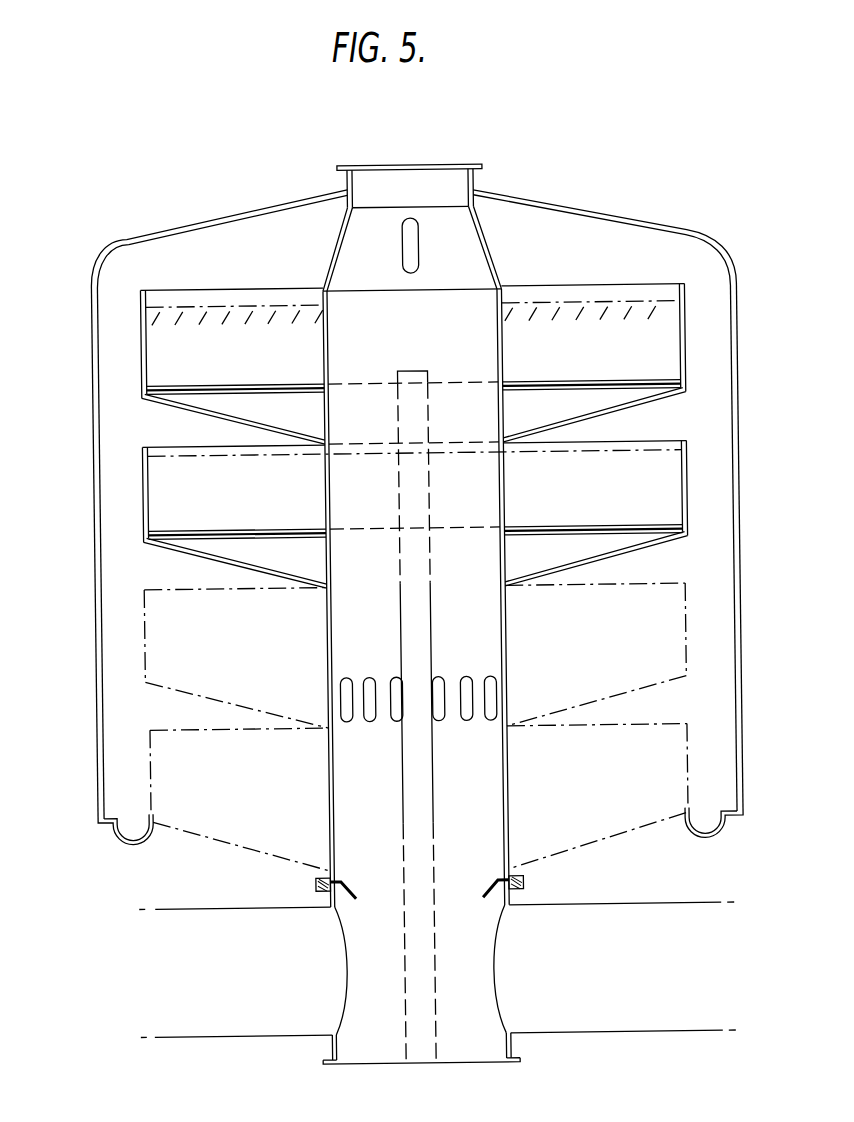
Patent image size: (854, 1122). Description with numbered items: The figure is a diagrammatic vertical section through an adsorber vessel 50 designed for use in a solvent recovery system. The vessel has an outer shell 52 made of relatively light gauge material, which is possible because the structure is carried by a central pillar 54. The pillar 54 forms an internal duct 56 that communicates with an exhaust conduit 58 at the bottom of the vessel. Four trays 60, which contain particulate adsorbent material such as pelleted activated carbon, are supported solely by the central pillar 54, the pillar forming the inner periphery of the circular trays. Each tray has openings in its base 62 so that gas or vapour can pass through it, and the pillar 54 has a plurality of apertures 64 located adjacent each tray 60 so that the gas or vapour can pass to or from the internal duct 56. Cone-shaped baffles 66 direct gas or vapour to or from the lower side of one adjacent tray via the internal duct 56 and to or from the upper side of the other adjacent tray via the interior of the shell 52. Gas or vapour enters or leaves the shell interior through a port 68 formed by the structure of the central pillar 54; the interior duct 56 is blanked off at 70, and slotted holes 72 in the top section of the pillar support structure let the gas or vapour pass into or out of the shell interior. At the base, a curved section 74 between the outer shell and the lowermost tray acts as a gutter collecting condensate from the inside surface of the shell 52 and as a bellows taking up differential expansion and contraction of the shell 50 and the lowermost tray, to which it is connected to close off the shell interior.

The adsorber vessel 50 is at (155, 226).
The outer shell 52 is at (97, 327).
The central pillar 54 is at (322, 627).
The internal duct 56 is at (351, 573).
The exhaust conduit 58 is at (225, 916).
The tray 60 is at (145, 374).
The tray base 62 is at (258, 383).
The apertures 64 is at (467, 681).
The cone-shaped baffle 66 is at (623, 415).
The port 68 is at (419, 164).
The blanked-off portion of interior duct 70 is at (436, 287).
The slotted holes 72 is at (408, 251).
The curved section 74 is at (125, 841).